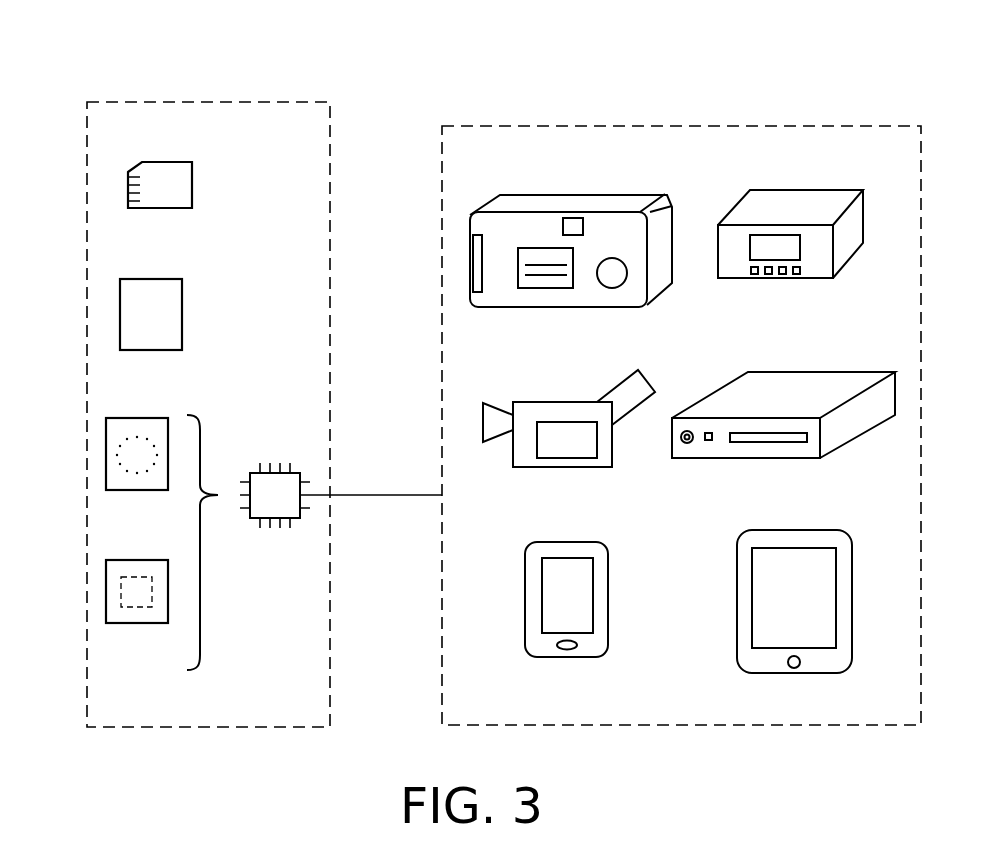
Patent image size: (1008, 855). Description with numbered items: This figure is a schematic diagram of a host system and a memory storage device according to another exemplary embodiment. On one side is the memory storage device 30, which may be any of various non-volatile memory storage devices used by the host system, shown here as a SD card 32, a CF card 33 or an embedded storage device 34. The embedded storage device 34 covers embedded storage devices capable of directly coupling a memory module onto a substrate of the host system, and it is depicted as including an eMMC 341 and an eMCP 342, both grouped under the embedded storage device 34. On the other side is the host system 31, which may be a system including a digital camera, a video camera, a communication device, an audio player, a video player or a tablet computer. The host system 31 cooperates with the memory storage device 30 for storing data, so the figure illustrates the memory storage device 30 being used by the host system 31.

The memory storage device 30 is at (197, 102).
The host system 31 is at (603, 127).
The SD card 32 is at (128, 192).
The CF card 33 is at (120, 315).
The embedded storage device 34 is at (278, 463).
The eMMC 341 is at (106, 455).
The eMCP 342 is at (106, 592).